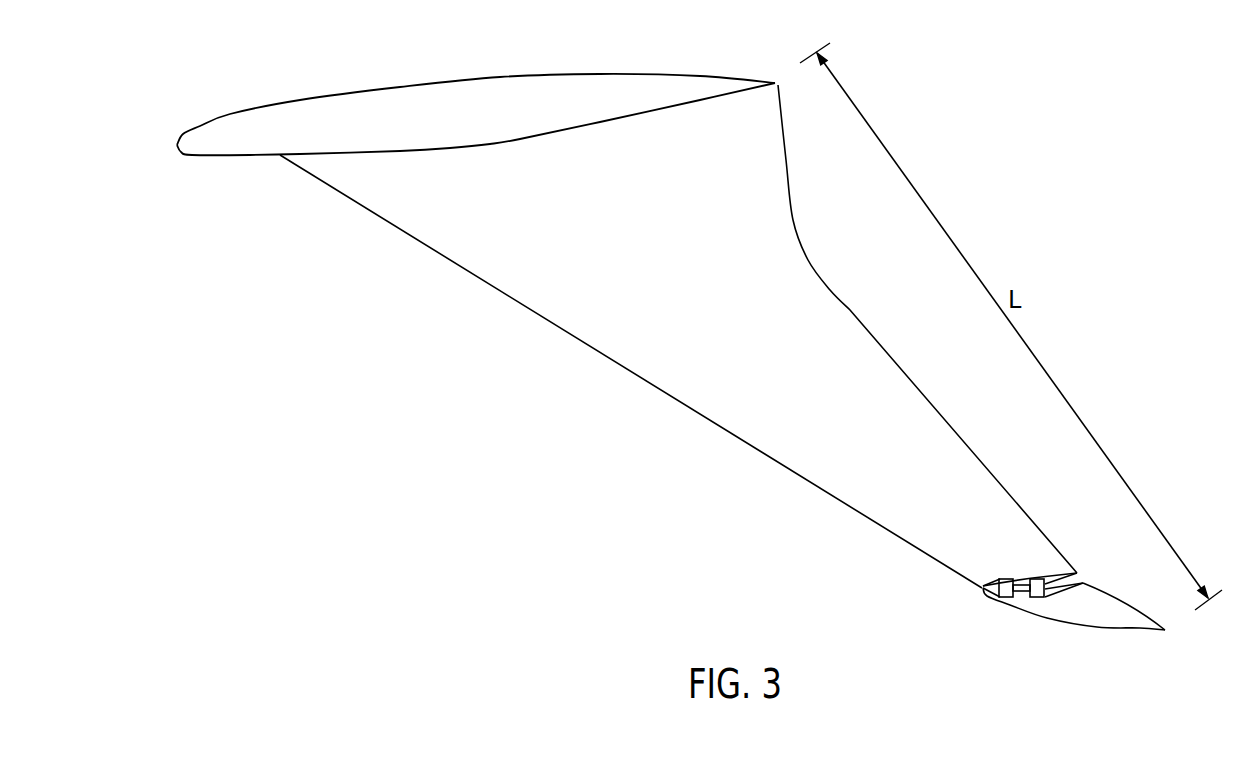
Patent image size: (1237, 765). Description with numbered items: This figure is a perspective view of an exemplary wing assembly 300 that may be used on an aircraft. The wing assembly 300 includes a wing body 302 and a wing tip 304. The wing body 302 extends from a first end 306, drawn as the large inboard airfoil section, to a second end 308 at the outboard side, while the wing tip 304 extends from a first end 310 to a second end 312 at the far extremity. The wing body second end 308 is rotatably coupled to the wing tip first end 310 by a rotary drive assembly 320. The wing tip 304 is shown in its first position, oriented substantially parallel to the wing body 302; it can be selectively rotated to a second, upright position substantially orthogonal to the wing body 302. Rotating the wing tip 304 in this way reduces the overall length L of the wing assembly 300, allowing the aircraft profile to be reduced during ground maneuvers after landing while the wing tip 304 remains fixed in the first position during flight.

The wing assembly 300 is at (992, 122).
The wing body 302 is at (764, 102).
The wing tip 304 is at (1100, 617).
The first end 306 is at (603, 83).
The second end 308 is at (1066, 567).
The first end 310 is at (1023, 602).
The second end 312 is at (1143, 625).
The rotary drive assembly 320 is at (960, 600).